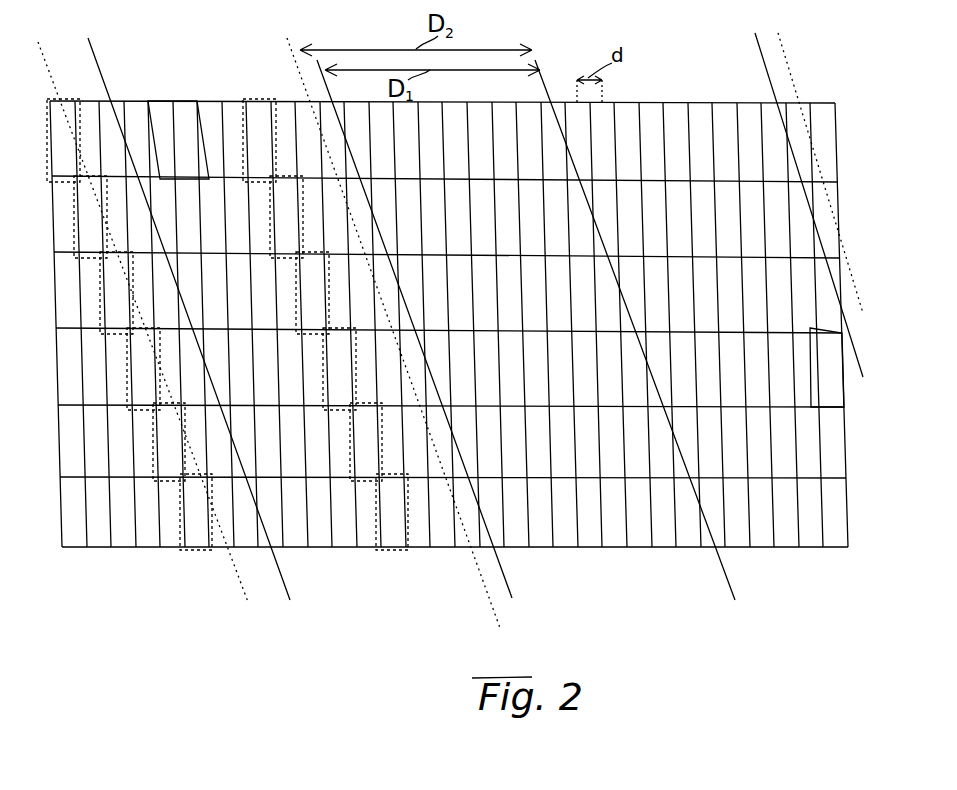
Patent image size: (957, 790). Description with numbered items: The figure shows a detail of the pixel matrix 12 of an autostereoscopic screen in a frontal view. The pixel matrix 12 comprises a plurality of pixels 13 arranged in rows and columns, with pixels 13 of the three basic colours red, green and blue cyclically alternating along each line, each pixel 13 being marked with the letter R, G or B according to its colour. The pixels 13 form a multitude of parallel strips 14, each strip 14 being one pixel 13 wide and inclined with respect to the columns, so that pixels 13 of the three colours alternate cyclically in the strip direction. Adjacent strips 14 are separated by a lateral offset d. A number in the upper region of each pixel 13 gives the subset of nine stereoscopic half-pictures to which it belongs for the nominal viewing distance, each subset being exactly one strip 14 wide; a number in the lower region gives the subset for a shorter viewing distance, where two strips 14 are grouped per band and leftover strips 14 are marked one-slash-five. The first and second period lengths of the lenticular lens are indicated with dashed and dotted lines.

The pixel matrix 12 is at (872, 153).
The pixels 13 is at (207, 100).
The strips of pixels 14 is at (63, 98).